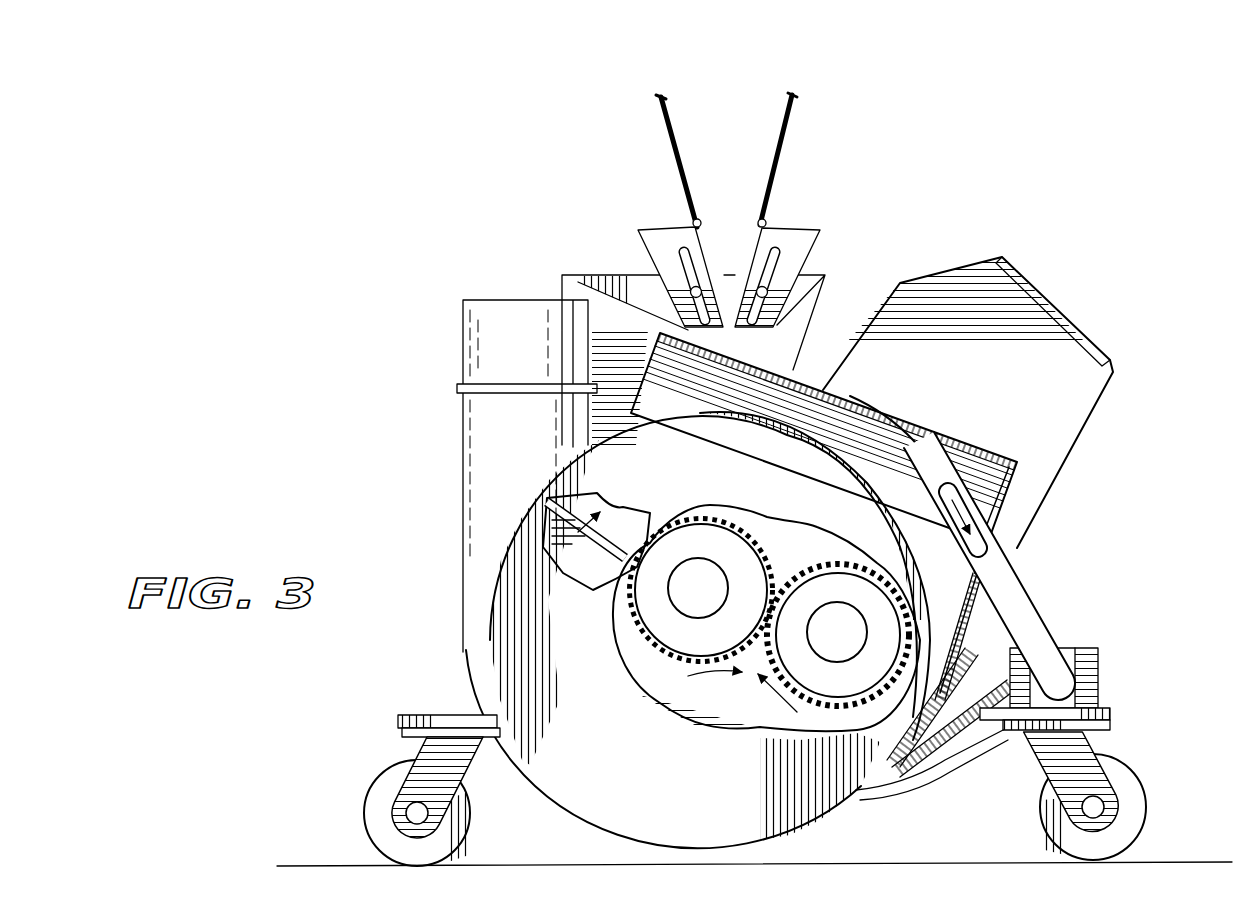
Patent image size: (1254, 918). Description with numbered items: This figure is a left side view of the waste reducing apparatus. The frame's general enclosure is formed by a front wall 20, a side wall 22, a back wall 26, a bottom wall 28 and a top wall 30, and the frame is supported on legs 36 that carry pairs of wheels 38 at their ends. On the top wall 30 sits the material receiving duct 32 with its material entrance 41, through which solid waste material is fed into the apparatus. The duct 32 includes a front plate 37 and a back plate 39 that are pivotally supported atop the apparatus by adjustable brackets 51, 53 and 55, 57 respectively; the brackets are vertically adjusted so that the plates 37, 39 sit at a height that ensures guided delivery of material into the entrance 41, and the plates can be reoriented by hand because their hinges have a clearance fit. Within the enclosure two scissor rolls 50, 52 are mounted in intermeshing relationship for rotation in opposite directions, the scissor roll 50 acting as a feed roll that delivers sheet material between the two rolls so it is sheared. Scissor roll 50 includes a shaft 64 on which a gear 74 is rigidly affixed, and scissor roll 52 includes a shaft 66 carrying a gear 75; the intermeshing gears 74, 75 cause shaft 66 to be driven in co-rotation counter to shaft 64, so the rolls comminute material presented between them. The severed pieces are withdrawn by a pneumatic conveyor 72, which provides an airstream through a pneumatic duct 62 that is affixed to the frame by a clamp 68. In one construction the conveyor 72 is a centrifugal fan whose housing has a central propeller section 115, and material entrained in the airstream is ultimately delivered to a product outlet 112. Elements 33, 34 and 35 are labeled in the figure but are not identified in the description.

The front wall 20 is at (1013, 507).
The side wall 22 is at (824, 437).
The back wall 26 is at (643, 373).
The bottom wall 28 is at (890, 755).
The top wall 30 is at (817, 385).
The material receiving duct 32 is at (735, 196).
The cover 33 is at (987, 402).
The cover edge 34 is at (1074, 311).
The cover lip 35 is at (1050, 297).
The legs 36 is at (397, 724).
The front plate 37 is at (773, 172).
The wheels 38 is at (365, 796).
The back plate 39 is at (682, 175).
The material entrance 41 is at (735, 186).
The scissor roll 50 is at (655, 660).
The adjustable bracket 51 is at (837, 266).
The scissor roll 52 is at (760, 713).
The adjustable bracket 53 is at (820, 230).
The adjustable bracket 55 is at (667, 230).
The adjustable bracket 57 is at (626, 267).
The pneumatic duct 62 is at (1027, 577).
The shaft 64 is at (714, 606).
The shaft 66 is at (852, 646).
The clamp 68 is at (1088, 646).
The pneumatic conveyor 72 is at (425, 612).
The gear 74 is at (701, 590).
The gear 75 is at (838, 635).
The product outlet 112 is at (518, 297).
The central propeller section 115 is at (568, 562).